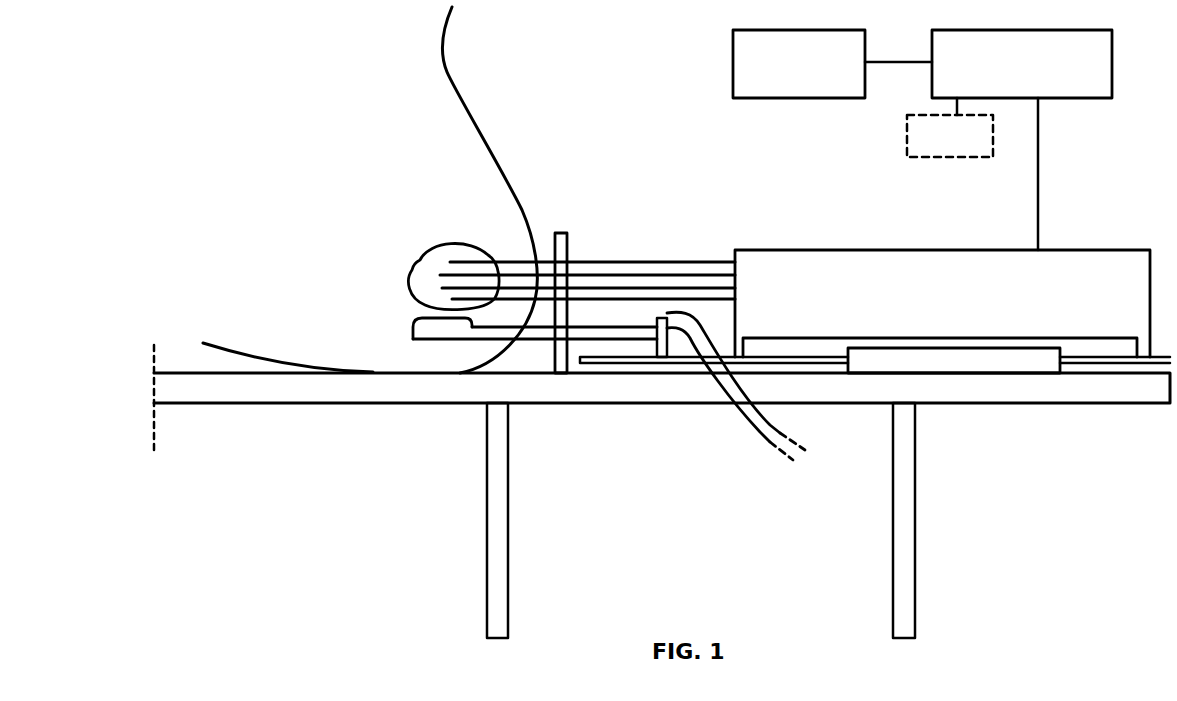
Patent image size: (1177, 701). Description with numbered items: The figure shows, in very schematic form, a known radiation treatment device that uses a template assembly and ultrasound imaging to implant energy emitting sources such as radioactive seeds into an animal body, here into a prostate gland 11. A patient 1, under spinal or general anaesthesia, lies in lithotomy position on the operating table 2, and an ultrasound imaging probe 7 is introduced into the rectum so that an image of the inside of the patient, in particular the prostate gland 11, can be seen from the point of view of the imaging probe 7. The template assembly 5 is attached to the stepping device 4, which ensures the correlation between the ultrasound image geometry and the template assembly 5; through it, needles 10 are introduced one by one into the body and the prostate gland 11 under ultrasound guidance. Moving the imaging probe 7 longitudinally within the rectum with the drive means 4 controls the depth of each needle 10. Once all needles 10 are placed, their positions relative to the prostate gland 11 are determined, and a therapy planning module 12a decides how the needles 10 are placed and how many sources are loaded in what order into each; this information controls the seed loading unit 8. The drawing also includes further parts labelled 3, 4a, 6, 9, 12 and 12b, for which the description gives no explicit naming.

The patient 1 is at (473, 143).
The operating table 2 is at (358, 390).
The support plate 3 is at (988, 363).
The stepping device 4 is at (607, 365).
The hose 4a is at (700, 365).
The template assembly 5 is at (563, 245).
The clamp 6 is at (690, 318).
The imaging probe 7 is at (430, 331).
The seed loading unit 8 is at (890, 258).
The sensor cable 9 is at (614, 304).
The needles 10 is at (643, 285).
The prostate gland 11 is at (430, 262).
The control unit 12 is at (1077, 90).
The therapy planning module 12a is at (747, 78).
The memory unit 12b is at (967, 147).